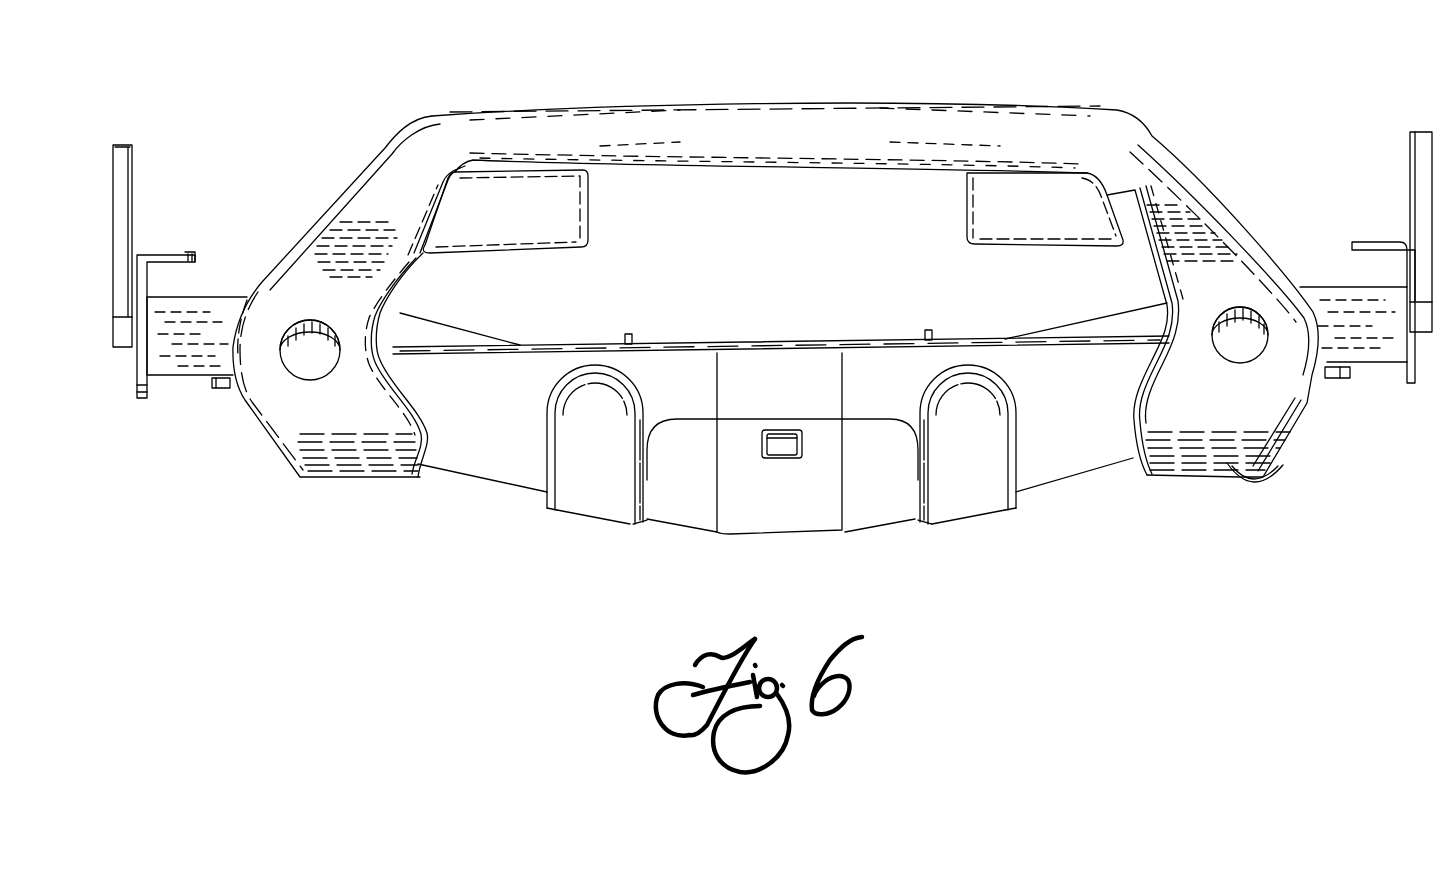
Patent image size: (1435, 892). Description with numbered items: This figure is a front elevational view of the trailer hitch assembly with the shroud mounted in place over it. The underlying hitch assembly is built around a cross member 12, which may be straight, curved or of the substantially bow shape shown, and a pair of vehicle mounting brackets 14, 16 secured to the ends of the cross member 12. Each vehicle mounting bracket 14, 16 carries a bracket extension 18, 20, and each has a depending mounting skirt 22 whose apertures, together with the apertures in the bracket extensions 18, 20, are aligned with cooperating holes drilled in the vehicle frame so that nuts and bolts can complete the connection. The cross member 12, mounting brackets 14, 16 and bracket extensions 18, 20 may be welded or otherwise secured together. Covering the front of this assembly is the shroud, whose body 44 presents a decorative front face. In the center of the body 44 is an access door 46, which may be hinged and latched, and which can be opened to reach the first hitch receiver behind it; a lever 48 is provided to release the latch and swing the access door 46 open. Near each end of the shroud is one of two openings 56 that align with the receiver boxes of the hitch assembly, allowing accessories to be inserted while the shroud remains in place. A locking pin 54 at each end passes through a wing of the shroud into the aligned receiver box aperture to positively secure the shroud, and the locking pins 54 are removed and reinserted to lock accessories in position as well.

The cross member 12 is at (183, 370).
The vehicle mounting bracket 14 is at (142, 300).
The vehicle mounting bracket 16 is at (1400, 260).
The bracket extension 18 is at (127, 222).
The bracket extension 20 is at (1413, 175).
The mounting skirt 22 is at (185, 252).
The body 44 is at (1000, 130).
The access door 46 is at (865, 502).
The lever 48 is at (783, 447).
The locking pin 54 is at (222, 390).
The opening 56 is at (313, 350).